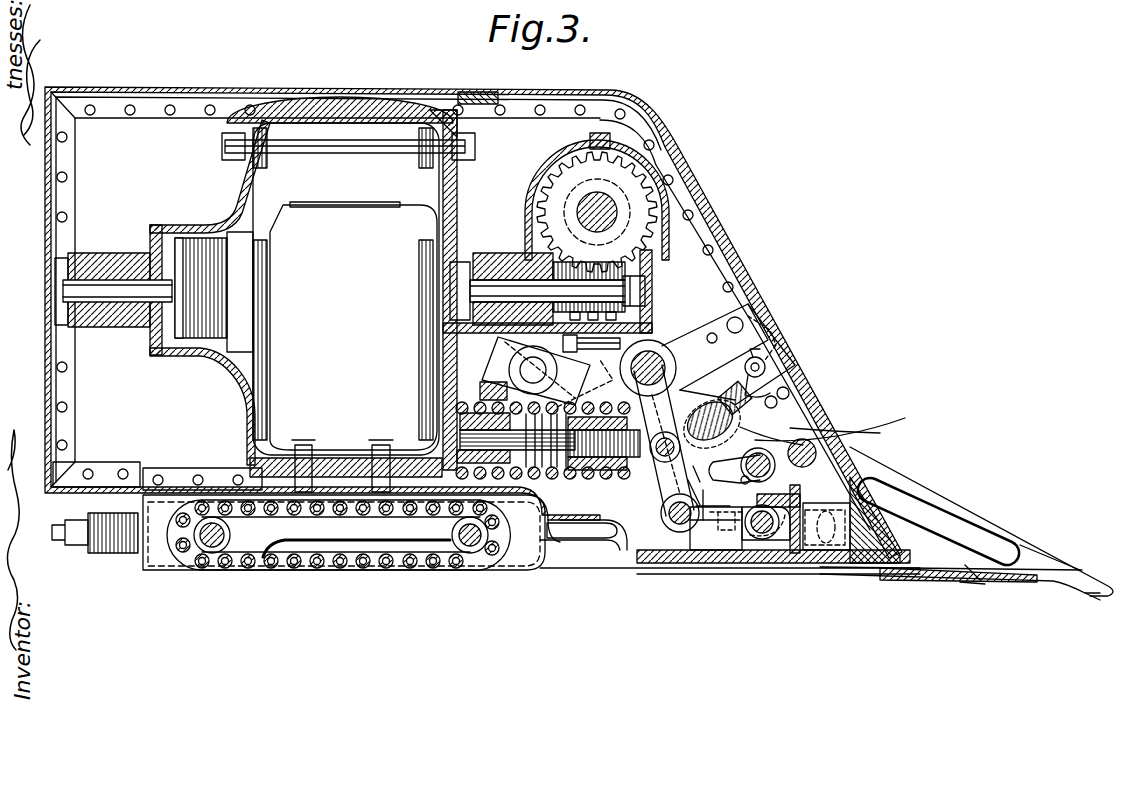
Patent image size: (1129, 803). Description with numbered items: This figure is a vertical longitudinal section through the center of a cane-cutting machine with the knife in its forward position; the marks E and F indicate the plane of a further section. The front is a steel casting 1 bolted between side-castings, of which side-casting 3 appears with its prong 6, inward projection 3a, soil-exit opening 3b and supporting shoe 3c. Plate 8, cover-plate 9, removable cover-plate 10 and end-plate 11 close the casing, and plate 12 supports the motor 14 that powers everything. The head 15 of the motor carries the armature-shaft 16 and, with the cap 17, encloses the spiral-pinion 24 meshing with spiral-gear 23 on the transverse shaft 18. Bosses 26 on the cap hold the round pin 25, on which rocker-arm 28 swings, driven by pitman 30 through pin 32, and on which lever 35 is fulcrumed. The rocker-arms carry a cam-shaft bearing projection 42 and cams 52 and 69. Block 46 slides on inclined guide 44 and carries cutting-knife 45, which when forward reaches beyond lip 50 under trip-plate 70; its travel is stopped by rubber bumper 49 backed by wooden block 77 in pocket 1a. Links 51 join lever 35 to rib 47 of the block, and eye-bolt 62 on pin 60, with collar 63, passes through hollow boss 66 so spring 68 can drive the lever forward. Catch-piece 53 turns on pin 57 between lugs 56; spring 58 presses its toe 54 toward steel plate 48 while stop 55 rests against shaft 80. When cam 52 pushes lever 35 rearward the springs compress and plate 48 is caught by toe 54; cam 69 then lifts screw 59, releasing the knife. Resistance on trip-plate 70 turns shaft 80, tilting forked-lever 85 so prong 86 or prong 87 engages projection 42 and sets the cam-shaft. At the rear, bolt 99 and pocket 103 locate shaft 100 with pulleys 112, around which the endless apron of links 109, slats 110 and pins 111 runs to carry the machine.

The steel casting 1 is at (790, 327).
The pocket 1a is at (835, 563).
The side-casting 3 is at (743, 412).
The projection 3a is at (1040, 566).
The opening 3b is at (938, 521).
The shoe 3c is at (618, 560).
The prong 6 is at (1098, 594).
The plate 8 is at (337, 291).
The cover-plate 9 is at (440, 92).
The cover-plate 10 is at (660, 141).
The end-plate 11 is at (40, 192).
The plate 12 is at (90, 488).
The motor 14 is at (360, 195).
The head 15 is at (452, 205).
The armature-shaft 16 is at (350, 292).
The cap 17 is at (652, 262).
The shaft 18 is at (596, 198).
The spiral-gear 23 is at (540, 190).
The spiral-pinion 24 is at (625, 318).
The round pin 25 is at (672, 360).
The boss 26 is at (700, 358).
The rocker-arm 28 is at (615, 365).
The pitman 30 is at (498, 352).
The pin 32 is at (533, 370).
The lever 35 is at (685, 510).
The projection 42 is at (695, 488).
The guide 44 is at (580, 540).
The cutting-knife 45 is at (770, 563).
The block 46 is at (645, 560).
The rib 47 is at (755, 540).
The steel plate 48 is at (757, 504).
The rubber bumper 49 is at (808, 540).
The lip 50 is at (976, 561).
The link 51 is at (700, 532).
The cam 52 is at (699, 469).
The catch-piece 53 is at (734, 474).
The toe 54 is at (707, 502).
The stop 55 is at (838, 447).
The lug 56 is at (785, 390).
The pin 57 is at (758, 459).
The spring 58 is at (790, 400).
The screw 59 is at (770, 368).
The pin 60 is at (662, 433).
The eye-bolt 62 is at (659, 436).
The collar 63 is at (600, 479).
The boss 66 is at (513, 421).
The spring 68 is at (566, 479).
The cam 69 is at (726, 393).
The trip-plate 70 is at (978, 584).
The wooden block 77 is at (875, 530).
The shaft 80 is at (810, 440).
The forked-lever 85 is at (740, 339).
The prong 86 is at (712, 421).
The prong 87 is at (735, 474).
The bolt 99 is at (62, 540).
The shaft 100 is at (205, 560).
The pocket 103 is at (160, 560).
The link 109 is at (340, 552).
The slat 110 is at (395, 570).
The pin 111 is at (292, 568).
The pulley 112 is at (230, 535).
The section line E—F E is at (730, 592).
The section line E— F is at (710, 300).